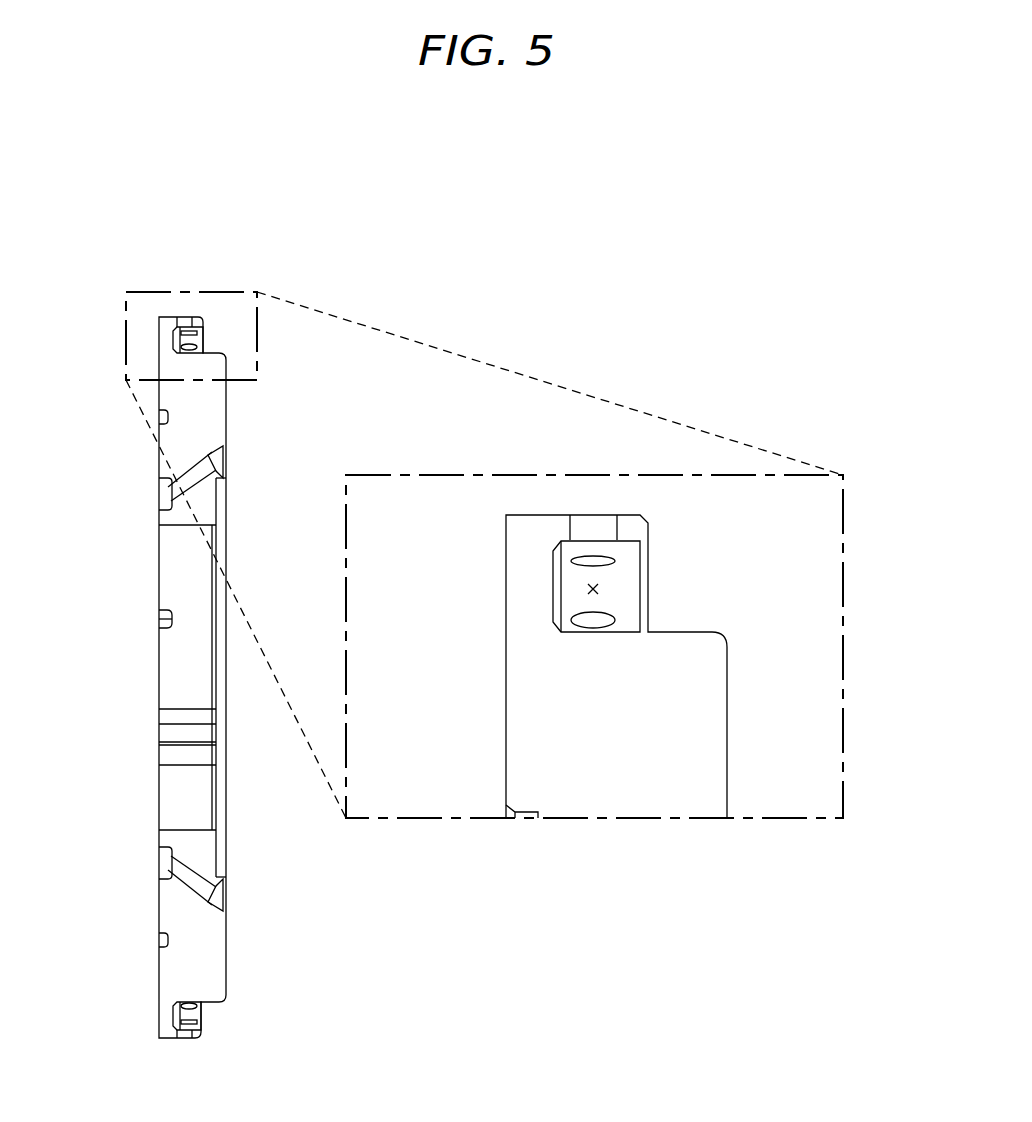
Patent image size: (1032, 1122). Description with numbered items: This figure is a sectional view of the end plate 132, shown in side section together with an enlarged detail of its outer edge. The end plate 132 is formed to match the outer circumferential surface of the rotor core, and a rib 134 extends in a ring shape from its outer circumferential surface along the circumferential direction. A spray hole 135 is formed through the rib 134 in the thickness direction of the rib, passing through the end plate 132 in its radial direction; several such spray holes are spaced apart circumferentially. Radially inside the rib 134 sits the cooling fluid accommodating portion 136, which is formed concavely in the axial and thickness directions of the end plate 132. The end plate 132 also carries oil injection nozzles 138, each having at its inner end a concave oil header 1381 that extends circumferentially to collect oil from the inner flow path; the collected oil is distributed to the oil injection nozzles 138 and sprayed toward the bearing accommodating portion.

The end plate 132 is at (133, 733).
The rib 134 is at (628, 521).
The spray hole 135 is at (580, 539).
The cooling fluid accommodating portion 136 is at (598, 588).
The oil injection nozzle 138 is at (197, 472).
The oil header 1381 is at (160, 493).